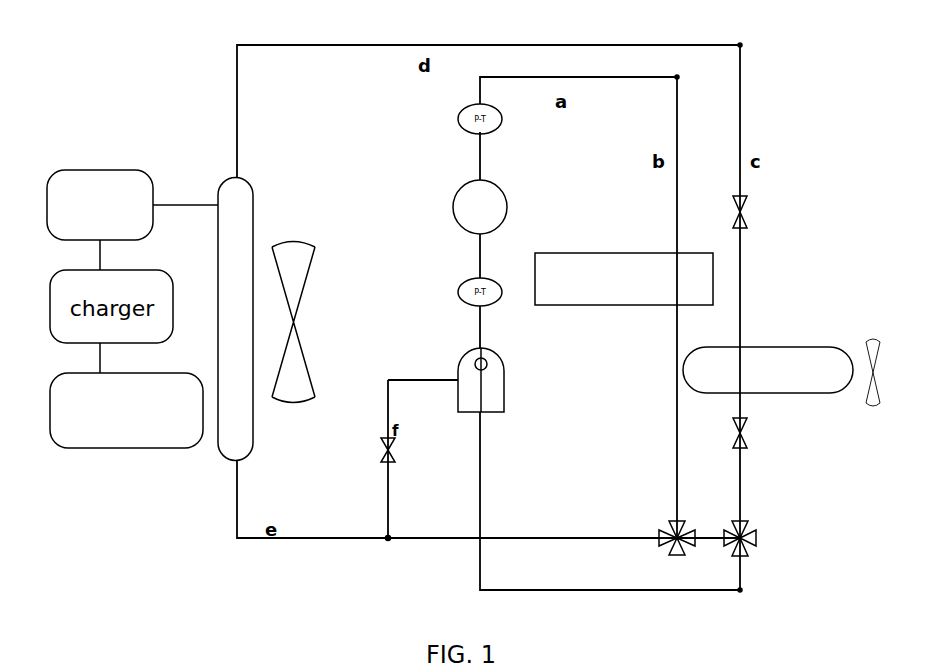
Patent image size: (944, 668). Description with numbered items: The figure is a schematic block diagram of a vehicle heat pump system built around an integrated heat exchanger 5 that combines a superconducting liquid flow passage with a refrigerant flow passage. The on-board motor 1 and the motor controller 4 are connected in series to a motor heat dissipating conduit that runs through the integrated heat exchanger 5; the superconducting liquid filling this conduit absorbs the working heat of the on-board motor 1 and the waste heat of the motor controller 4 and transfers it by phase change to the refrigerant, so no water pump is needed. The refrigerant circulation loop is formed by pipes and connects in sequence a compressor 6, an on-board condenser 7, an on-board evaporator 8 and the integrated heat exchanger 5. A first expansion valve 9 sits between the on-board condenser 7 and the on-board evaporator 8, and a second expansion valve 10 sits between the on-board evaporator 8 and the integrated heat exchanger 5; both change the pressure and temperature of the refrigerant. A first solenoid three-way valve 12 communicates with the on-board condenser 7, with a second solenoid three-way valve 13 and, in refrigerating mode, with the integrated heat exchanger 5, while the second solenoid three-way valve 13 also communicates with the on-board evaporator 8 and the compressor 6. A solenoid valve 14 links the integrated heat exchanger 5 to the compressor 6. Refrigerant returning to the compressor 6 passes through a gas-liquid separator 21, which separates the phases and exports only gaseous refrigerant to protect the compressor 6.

The on-board motor 1 is at (103, 183).
The motor controller 4 is at (103, 448).
The integrated heat exchanger 5 is at (243, 188).
The compressor 6 is at (507, 207).
The on-board condenser 7 is at (625, 253).
The on-board evaporator 8 is at (765, 347).
The first expansion valve 9 is at (747, 435).
The second expansion valve 10 is at (747, 212).
The first solenoid three-way valve 12 is at (662, 542).
The second solenoid three-way valve 13 is at (745, 536).
The solenoid valve 14 is at (395, 452).
The gas-liquid separator 21 is at (504, 384).